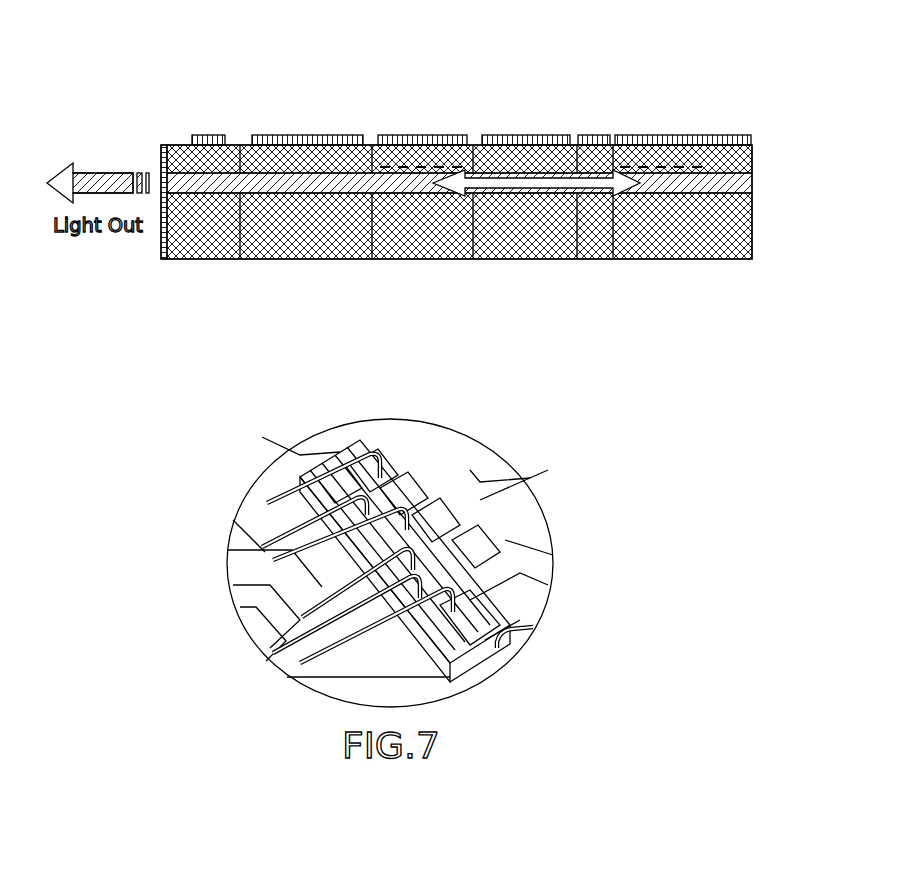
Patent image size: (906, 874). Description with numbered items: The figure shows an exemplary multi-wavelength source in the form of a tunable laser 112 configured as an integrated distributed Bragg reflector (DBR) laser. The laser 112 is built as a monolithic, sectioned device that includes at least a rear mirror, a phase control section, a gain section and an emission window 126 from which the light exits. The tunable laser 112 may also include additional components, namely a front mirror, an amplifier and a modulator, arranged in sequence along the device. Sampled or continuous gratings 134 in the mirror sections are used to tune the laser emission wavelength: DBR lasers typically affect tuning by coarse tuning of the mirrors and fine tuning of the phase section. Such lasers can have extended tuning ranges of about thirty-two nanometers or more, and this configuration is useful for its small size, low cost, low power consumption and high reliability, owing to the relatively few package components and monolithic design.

The tunable laser 112 is at (138, 92).
The emission window 126 is at (161, 241).
The gratings 134 is at (405, 168).